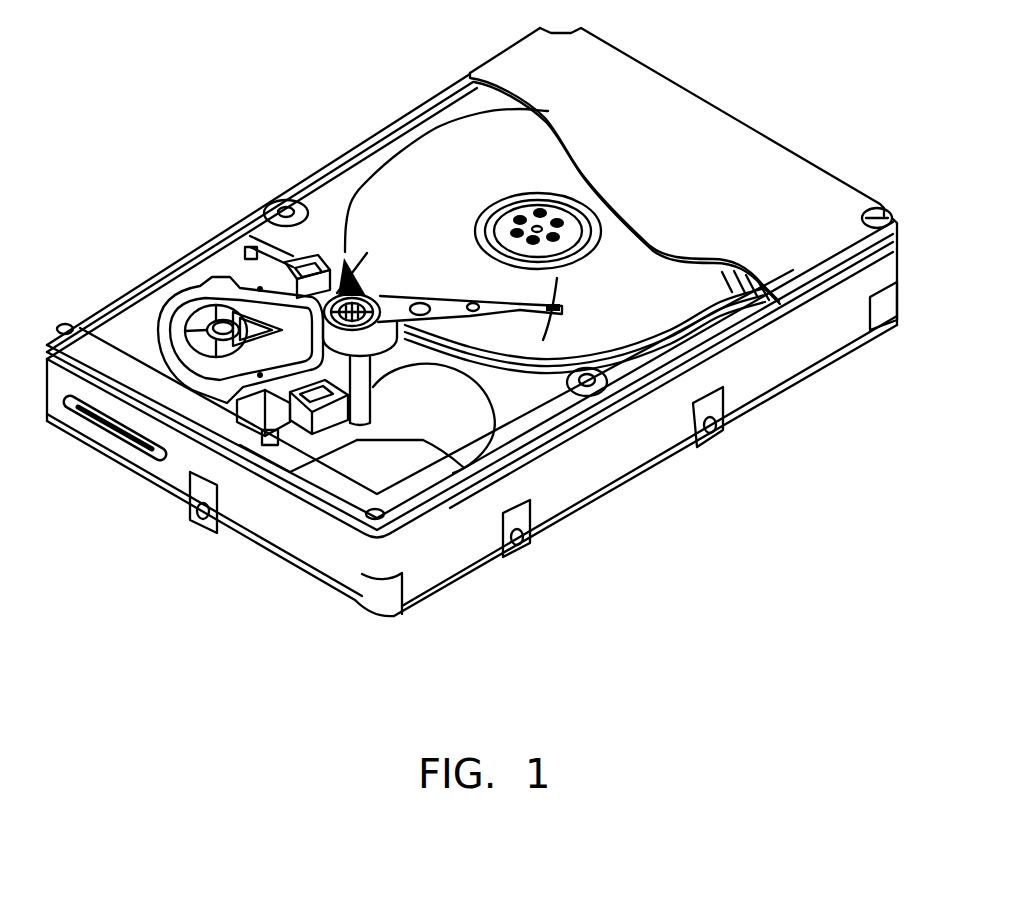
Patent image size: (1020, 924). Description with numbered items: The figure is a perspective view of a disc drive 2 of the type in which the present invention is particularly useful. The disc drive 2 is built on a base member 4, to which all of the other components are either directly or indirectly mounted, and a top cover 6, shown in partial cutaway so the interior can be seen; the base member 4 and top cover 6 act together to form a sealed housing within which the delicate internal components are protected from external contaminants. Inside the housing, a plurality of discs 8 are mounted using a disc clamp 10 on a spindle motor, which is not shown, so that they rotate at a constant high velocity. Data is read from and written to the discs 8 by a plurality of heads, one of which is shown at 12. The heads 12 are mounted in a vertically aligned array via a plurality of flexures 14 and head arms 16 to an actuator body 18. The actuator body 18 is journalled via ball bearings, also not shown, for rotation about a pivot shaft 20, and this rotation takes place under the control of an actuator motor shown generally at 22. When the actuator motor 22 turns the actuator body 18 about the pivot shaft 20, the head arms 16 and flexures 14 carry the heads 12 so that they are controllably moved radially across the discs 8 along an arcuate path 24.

The disc drive 2 is at (766, 98).
The base member 4 is at (645, 466).
The top cover 6 is at (630, 88).
The discs 8 is at (415, 166).
The disc clamp 10 is at (513, 193).
The heads 12 is at (570, 322).
The flexures 14 is at (520, 308).
The head arms 16 is at (405, 305).
The actuator body 18 is at (342, 296).
The pivot shaft 20 is at (282, 290).
The actuator motor 22 is at (155, 300).
The arcuate path 24 is at (560, 307).